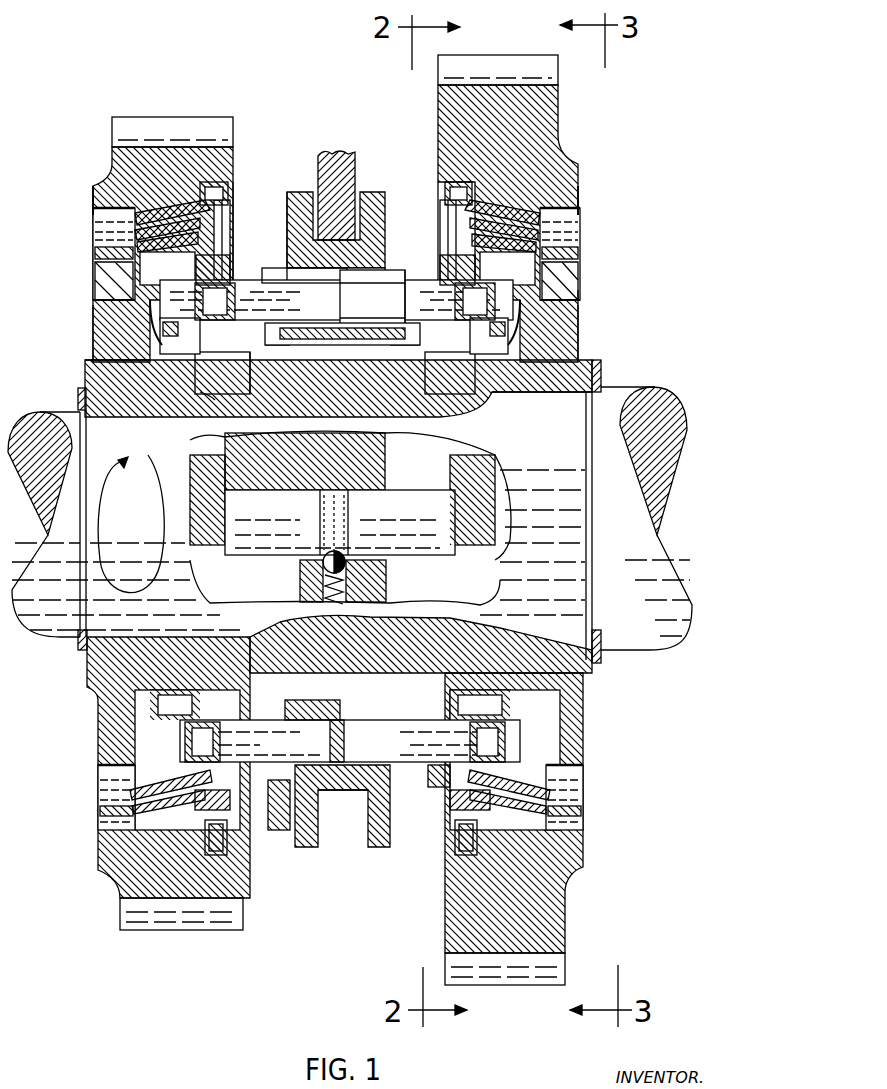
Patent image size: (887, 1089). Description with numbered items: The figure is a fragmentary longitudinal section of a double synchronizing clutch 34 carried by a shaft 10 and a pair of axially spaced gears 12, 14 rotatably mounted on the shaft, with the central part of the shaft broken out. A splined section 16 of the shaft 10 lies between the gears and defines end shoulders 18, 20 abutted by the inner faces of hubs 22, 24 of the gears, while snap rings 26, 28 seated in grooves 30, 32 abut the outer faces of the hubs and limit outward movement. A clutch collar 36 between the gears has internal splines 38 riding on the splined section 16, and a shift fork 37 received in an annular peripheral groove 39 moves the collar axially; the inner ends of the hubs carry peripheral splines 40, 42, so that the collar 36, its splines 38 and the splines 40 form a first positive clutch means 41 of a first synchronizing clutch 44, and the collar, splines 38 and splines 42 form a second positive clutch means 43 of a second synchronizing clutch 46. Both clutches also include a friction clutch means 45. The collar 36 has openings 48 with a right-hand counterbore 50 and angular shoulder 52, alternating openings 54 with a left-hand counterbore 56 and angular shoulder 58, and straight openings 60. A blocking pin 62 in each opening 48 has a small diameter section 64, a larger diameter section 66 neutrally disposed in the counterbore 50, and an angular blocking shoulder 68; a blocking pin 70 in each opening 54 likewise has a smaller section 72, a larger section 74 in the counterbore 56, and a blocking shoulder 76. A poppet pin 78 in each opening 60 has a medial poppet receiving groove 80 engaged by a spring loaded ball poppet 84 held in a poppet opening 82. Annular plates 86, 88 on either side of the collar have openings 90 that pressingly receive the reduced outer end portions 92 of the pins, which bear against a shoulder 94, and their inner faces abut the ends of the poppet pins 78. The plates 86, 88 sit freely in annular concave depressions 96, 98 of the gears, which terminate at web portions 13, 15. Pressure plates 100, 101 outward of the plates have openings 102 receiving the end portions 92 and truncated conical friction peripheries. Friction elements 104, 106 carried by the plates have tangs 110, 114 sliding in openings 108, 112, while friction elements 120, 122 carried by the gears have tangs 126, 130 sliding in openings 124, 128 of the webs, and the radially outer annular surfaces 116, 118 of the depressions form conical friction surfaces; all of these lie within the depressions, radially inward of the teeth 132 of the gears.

The shaft 10 is at (352, 523).
The gear 12 is at (163, 254).
The web portion 13 is at (93, 316).
The gear 14 is at (508, 223).
The web portion 15 is at (578, 312).
The splined section 16 is at (312, 372).
The end shoulder 18 is at (252, 380).
The end shoulder 20 is at (372, 376).
The hub 22 is at (206, 402).
The hub 24 is at (492, 397).
The snap ring 26 is at (80, 395).
The snap ring 28 is at (596, 380).
The groove 30 is at (80, 540).
The groove 32 is at (596, 538).
The double synchronizing clutch 34 is at (338, 187).
The clutch collar 36 is at (366, 198).
The shift fork 37 is at (336, 195).
The internal splines 38 is at (285, 340).
The annular peripheral groove 39 is at (296, 218).
The peripheral splines 40 is at (222, 373).
The first positive clutch means 41 is at (288, 375).
The peripheral splines 42 is at (450, 373).
The second positive clutch means 43 is at (381, 375).
The first synchronizing clutch 44 is at (112, 342).
The friction clutch means 45 is at (236, 238).
The second synchronizing clutch 46 is at (556, 342).
The openings 48 is at (336, 262).
The counterbore 50 is at (372, 297).
The angular shoulder 52 is at (372, 313).
The openings 54 is at (376, 780).
The counterbore 56 is at (277, 805).
The angular shoulder 58 is at (343, 805).
The openings 60 is at (388, 484).
The blocking pin 62 is at (336, 300).
The small diameter section 64 is at (301, 271).
The larger diameter section 66 is at (395, 292).
The angular blocking shoulder 68 is at (342, 294).
The blocking pin 70 is at (421, 684).
The smaller diameter section 72 is at (430, 772).
The larger diameter section 74 is at (310, 750).
The angular blocking shoulder 76 is at (336, 740).
The poppet pin 78 is at (340, 522).
The poppet receiving groove 80 is at (352, 517).
The poppet openings 82 is at (386, 576).
The spring loaded ball poppet 84 is at (300, 570).
The annular plate 86 is at (222, 270).
The annular plate 88 is at (445, 270).
The openings 90 is at (334, 336).
The reduced outer end portions 92 is at (153, 345).
The shoulder 94 is at (210, 318).
The annular concave depression 96 is at (115, 297).
The annular concave depression 98 is at (578, 290).
The pressure plate 100 is at (190, 692).
The pressure plate 101 is at (508, 690).
The openings 102 is at (152, 724).
The first truncated cone shaped friction element 104 is at (98, 797).
The second truncated cone shaped friction element 106 is at (162, 212).
The openings 108 is at (232, 810).
The tangs 110 is at (230, 840).
The openings 112 is at (229, 230).
The tangs 114 is at (214, 200).
The radially outer annular surface 116 is at (147, 212).
The radially outer annular surface 118 is at (520, 215).
The first truncated cone shaped friction element 120 is at (128, 275).
The second truncated cone shaped friction element 122 is at (128, 230).
The openings 124 is at (100, 811).
The tangs 126 is at (98, 768).
The openings 128 is at (93, 212).
The tangs 130 is at (95, 253).
The teeth 132 is at (156, 134).